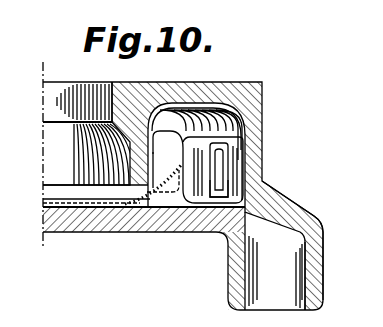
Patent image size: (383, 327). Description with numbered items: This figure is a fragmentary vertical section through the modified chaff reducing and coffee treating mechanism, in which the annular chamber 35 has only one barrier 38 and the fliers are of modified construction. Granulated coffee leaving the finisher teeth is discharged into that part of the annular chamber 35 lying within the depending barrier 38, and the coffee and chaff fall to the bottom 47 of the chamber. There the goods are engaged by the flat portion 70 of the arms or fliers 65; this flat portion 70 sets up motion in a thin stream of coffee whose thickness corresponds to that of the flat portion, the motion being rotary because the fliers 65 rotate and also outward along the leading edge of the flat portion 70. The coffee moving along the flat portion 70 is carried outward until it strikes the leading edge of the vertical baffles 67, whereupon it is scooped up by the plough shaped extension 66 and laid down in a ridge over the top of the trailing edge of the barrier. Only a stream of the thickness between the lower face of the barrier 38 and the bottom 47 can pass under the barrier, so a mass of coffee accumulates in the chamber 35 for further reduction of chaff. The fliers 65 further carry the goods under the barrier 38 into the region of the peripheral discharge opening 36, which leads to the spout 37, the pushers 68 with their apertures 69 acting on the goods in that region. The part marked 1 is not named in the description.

The body 1 is at (262, 104).
The annular chamber 35 is at (83, 133).
The peripheral discharge opening 36 is at (270, 207).
The spout 37 is at (275, 261).
The barrier 38 is at (134, 165).
The bottom of the annular chamber 47 is at (97, 210).
The fliers 65 is at (70, 199).
The plough shaped extension 66 is at (171, 188).
The vertical baffle 67 is at (146, 138).
The pusher 68 is at (228, 148).
The aperture 69 is at (223, 168).
The flat portion 70 is at (78, 204).